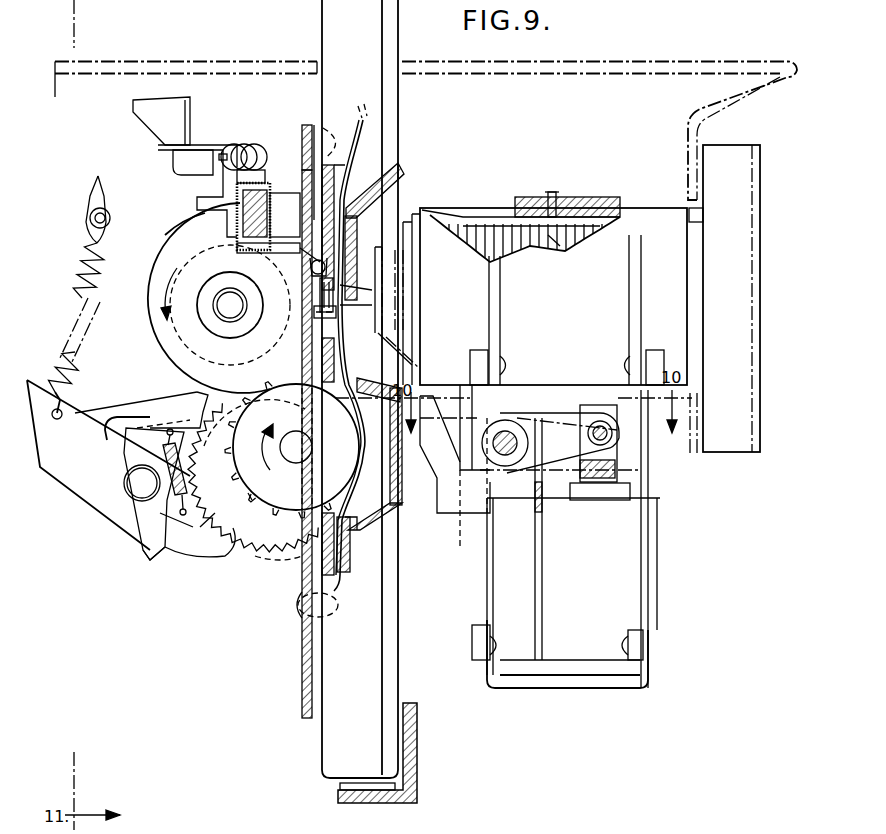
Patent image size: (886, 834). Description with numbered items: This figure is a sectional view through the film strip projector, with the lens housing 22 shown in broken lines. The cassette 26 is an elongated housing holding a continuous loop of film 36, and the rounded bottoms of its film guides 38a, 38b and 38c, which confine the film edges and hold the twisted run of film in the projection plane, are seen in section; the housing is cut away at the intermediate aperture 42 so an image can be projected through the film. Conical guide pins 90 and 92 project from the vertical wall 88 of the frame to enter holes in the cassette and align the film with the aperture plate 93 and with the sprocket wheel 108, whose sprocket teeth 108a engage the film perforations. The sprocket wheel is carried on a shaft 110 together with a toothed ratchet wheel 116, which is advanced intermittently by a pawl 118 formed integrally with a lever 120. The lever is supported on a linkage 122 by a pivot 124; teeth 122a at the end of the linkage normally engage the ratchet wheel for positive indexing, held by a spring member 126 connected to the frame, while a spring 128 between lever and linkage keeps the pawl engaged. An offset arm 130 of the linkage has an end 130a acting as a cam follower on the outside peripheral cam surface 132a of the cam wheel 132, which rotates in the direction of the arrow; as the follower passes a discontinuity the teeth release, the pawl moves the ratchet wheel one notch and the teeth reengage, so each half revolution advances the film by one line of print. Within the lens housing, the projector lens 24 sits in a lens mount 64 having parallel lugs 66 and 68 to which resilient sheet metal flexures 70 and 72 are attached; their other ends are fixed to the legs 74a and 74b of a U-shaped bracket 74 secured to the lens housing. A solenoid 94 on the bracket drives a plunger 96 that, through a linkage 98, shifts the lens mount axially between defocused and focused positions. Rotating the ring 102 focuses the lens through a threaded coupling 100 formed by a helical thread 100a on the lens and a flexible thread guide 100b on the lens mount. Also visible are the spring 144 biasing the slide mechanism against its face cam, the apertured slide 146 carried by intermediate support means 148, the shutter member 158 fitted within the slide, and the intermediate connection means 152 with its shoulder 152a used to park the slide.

The lens housing 22 is at (740, 60).
The projector lens 24 is at (750, 269).
The cassette 26 is at (388, 621).
The continuous loop of film 36 is at (352, 175).
The film guide 38a is at (345, 212).
The film guide 38b is at (322, 380).
The film guide 38c is at (352, 521).
The intermediate aperture 42 is at (345, 278).
The lens mount 64 is at (650, 208).
The lug 66 is at (629, 324).
The lug 68 is at (500, 294).
The flexure 70 is at (655, 498).
The flexure 72 is at (487, 572).
The U-shaped bracket 74 is at (580, 690).
The bracket leg 74a is at (645, 662).
The bracket leg 74b is at (490, 672).
The vertical wall 88 is at (304, 645).
The guide pin 90 is at (315, 131).
The guide pin 92 is at (340, 606).
The aperture plate 93 is at (345, 300).
The solenoid actuator 94 is at (632, 588).
The plunger 96 is at (617, 469).
The linkage 98 is at (556, 414).
The bracket 100 is at (487, 470).
The helical thread 100a is at (553, 242).
The flexible thread guide 100b is at (494, 212).
The ring 102 is at (719, 150).
The sprocket wheel 108 is at (258, 477).
The sprocket teeth 108a is at (257, 497).
The shaft 110 is at (290, 437).
The toothed ratchet wheel 116 is at (266, 555).
The pawl 118 is at (198, 405).
The lever 120 is at (148, 554).
The linkage 122 is at (72, 488).
The teeth 122a is at (208, 554).
The pivot 124 is at (133, 497).
The spring member 126 is at (72, 284).
The spring 128 is at (181, 466).
The offset arm 130 is at (110, 410).
The cam follower end 130a is at (200, 391).
The cam wheel 132 is at (180, 257).
The peripheral cam surface 132a is at (183, 223).
The spring 144 is at (244, 148).
The apertured slide 146 is at (320, 320).
The intermediate support means 148 is at (309, 268).
The intermediate connection means 152 is at (186, 114).
The shoulder 152a is at (173, 170).
The shutter member 158 is at (318, 298).